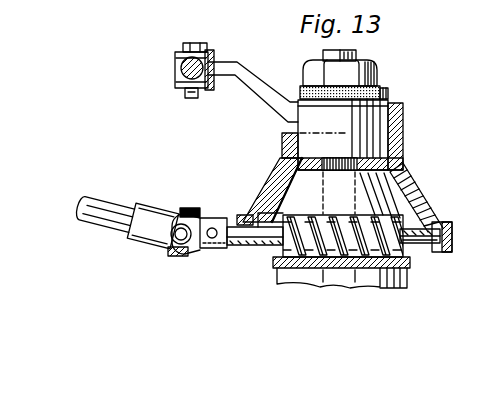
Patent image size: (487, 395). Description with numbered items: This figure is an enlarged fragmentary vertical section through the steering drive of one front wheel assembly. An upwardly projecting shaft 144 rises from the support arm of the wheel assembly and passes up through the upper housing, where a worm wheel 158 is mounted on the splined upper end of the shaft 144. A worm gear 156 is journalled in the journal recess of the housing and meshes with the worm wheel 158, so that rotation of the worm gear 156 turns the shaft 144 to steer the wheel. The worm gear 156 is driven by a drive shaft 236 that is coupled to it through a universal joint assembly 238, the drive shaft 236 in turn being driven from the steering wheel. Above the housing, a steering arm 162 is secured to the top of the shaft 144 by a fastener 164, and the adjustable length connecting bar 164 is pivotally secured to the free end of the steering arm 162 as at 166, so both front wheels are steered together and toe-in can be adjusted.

The shaft 144 is at (344, 163).
The worm gear 156 is at (428, 197).
The worm wheel 158 is at (402, 171).
The steering arm 162 is at (258, 88).
The fastener 164 is at (176, 73).
The pivotal connection 166 is at (210, 53).
The drive shaft 236 is at (97, 227).
The universal joint assembly 238 is at (176, 197).